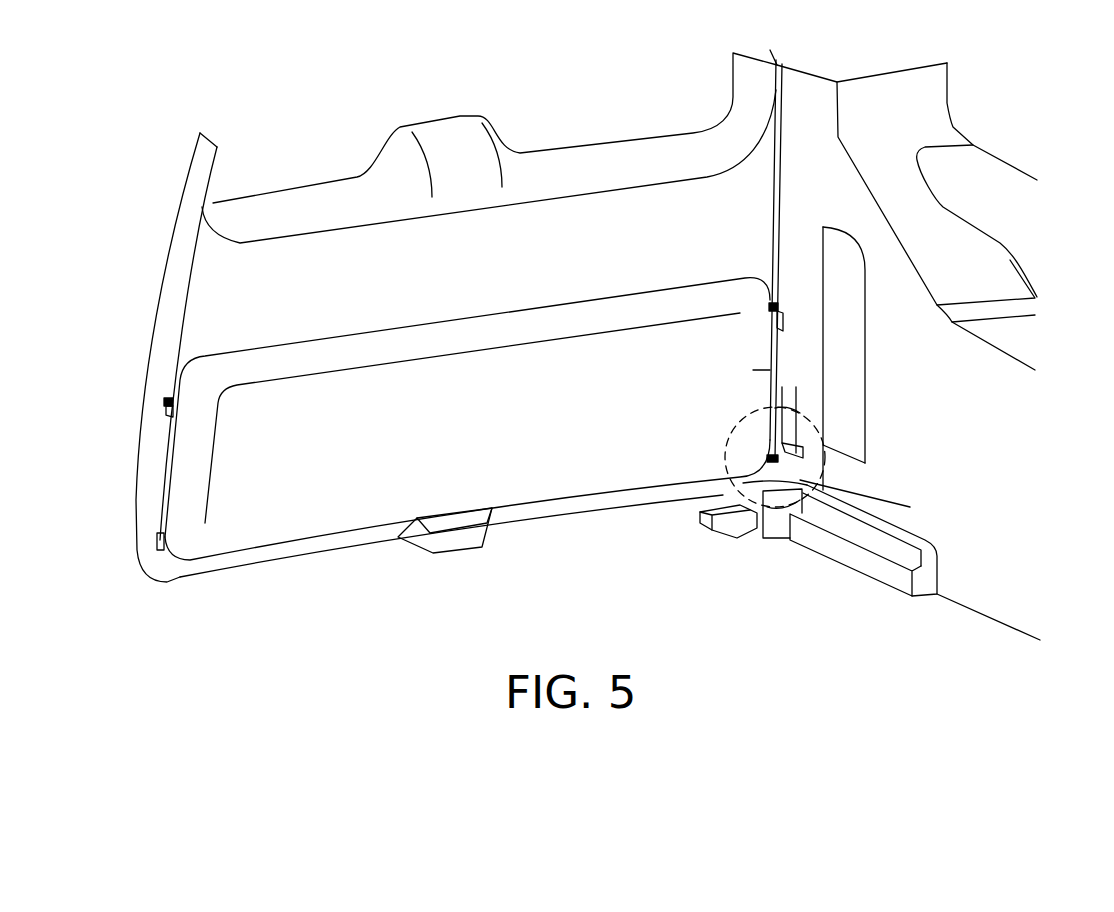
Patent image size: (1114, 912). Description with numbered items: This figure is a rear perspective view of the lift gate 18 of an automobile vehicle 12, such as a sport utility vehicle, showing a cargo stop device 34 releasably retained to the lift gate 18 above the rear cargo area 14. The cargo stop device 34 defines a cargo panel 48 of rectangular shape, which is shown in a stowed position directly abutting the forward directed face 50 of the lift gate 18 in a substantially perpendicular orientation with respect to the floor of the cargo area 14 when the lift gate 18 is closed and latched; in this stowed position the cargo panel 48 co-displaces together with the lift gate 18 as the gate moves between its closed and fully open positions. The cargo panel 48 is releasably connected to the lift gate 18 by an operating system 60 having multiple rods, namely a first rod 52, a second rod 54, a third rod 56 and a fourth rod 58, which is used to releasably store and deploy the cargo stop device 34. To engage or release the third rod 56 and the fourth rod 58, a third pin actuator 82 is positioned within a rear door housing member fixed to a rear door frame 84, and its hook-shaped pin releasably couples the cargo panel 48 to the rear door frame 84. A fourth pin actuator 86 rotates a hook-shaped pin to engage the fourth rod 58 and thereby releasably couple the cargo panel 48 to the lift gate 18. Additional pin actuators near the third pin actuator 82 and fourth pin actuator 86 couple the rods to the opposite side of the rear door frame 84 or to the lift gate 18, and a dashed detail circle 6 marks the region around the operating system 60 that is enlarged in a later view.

The detail region of FIG. 6 is at (745, 498).
The automobile vehicle 12 is at (967, 185).
The rear cargo area 14 is at (865, 368).
The lift gate 18 is at (638, 155).
The cargo stop device 34 is at (210, 370).
The cargo panel 48 is at (753, 370).
The forward directed face 50 is at (748, 263).
The first rod 52 is at (782, 445).
The second rod 54 is at (157, 548).
The third rod 56 is at (783, 310).
The fourth rod 58 is at (163, 403).
The operating system 60 is at (778, 460).
The third pin actuator 82 is at (783, 320).
The rear door frame 84 is at (797, 278).
The fourth pin actuator 86 is at (163, 413).